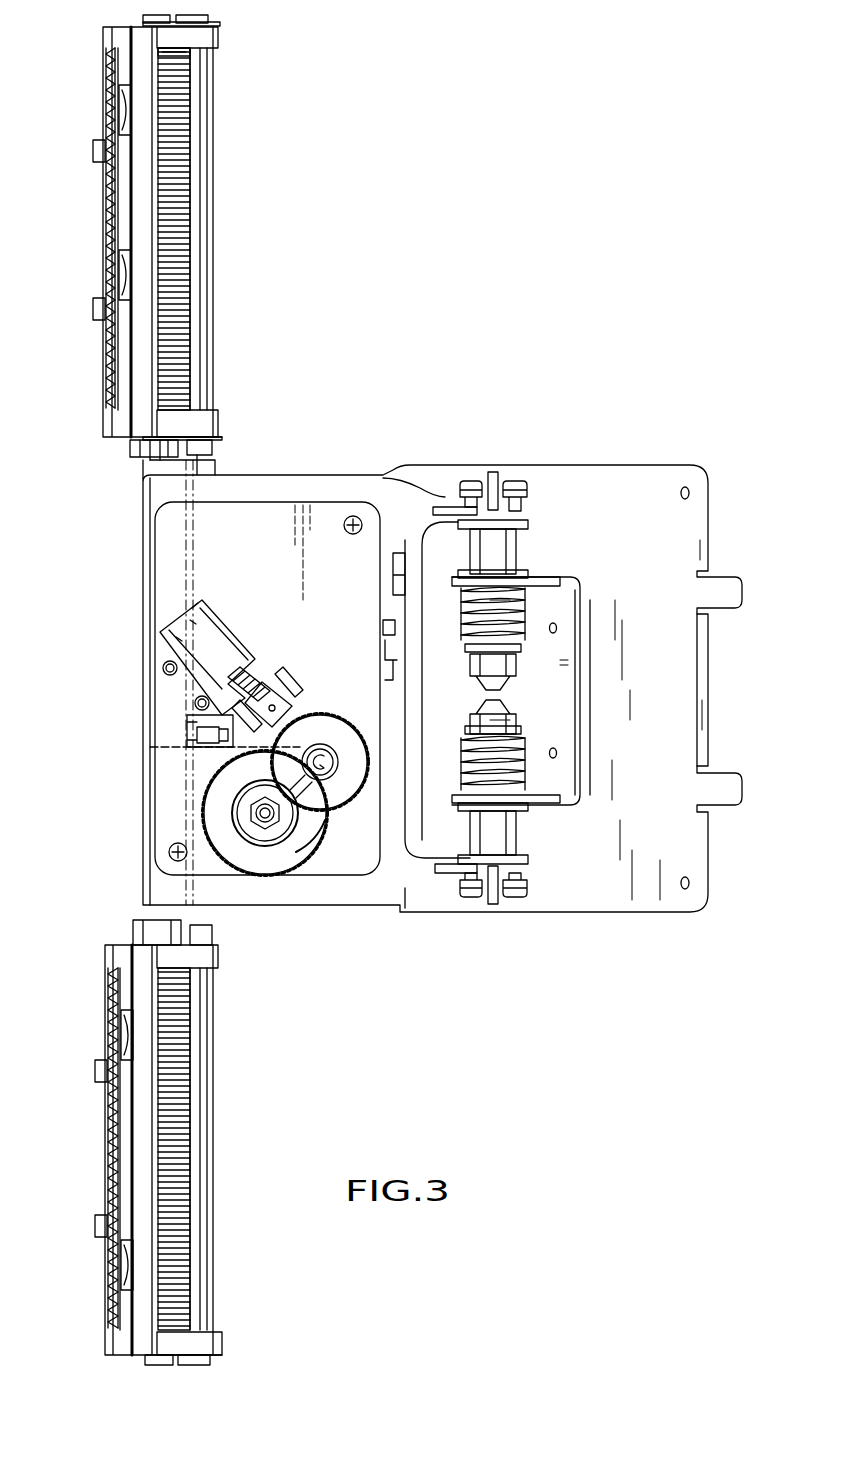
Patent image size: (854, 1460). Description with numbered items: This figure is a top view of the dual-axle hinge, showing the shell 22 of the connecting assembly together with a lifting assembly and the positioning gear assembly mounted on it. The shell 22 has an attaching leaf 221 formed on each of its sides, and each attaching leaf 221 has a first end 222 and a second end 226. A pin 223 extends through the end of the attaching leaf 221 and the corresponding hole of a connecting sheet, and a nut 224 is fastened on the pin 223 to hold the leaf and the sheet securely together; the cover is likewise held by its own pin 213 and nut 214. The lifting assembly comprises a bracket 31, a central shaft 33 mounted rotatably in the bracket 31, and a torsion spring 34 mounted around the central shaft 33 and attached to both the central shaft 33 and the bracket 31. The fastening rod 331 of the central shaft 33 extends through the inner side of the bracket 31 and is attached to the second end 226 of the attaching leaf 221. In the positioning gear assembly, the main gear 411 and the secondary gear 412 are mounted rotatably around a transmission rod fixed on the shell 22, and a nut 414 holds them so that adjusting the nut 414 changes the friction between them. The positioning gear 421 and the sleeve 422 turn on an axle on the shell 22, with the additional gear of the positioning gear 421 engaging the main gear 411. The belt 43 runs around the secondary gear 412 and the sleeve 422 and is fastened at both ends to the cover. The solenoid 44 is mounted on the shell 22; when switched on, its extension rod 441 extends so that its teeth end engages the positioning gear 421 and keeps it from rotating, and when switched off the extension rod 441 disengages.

The shell 22 is at (270, 505).
The attaching leaf 221 is at (325, 488).
The first end 222 is at (460, 497).
The pin 223 is at (470, 868).
The nut 224 is at (475, 893).
The second end 226 is at (160, 468).
The pin 213 is at (520, 516).
The nut 214 is at (520, 487).
The bracket 31 is at (208, 38).
The central shaft 33 is at (182, 58).
The torsion spring 34 is at (188, 140).
The fastening rod 331 is at (130, 445).
The belt 43 is at (303, 838).
The solenoid 44 is at (205, 615).
The extension rod 441 is at (218, 728).
The main gear 411 is at (250, 870).
The secondary gear 412 is at (250, 798).
The nut 414 is at (247, 813).
The positioning gear 421 is at (337, 707).
The sleeve 422 is at (320, 748).